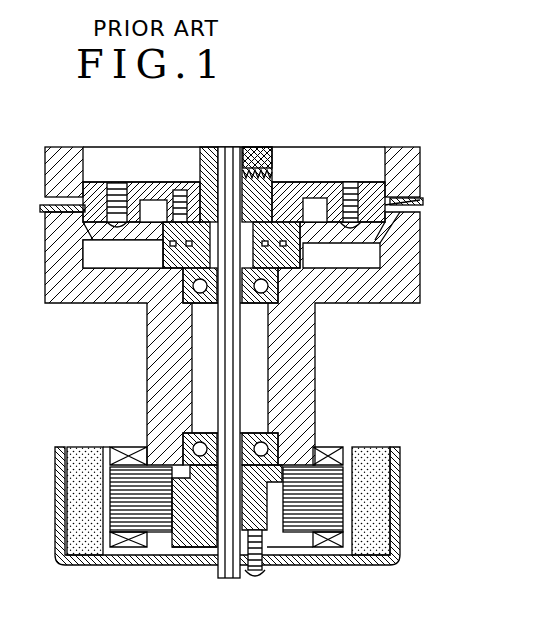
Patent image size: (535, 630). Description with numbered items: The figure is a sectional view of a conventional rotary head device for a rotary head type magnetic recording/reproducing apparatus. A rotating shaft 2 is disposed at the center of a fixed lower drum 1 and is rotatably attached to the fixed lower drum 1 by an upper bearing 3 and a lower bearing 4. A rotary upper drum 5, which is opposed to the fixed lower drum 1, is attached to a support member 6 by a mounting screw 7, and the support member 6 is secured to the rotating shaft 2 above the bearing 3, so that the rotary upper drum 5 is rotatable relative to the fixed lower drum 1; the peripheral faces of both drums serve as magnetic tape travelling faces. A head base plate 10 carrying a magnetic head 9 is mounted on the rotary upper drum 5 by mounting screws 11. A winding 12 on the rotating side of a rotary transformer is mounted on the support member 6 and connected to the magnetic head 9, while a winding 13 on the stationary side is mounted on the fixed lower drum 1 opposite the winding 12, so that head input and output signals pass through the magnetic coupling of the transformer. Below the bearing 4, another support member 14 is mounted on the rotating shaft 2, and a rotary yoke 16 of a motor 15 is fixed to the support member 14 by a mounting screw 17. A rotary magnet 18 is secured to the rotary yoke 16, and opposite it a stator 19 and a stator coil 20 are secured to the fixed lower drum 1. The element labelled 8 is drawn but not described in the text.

The fixed lower drum 1 is at (402, 288).
The rotating shaft 2 is at (227, 568).
The bearing 3 is at (300, 300).
The bearing 4 is at (303, 423).
The rotary upper drum 5 is at (408, 175).
The support member 6 is at (256, 147).
The mounting screw 7 is at (174, 188).
The block 8 is at (273, 150).
The magnetic head 9 is at (423, 203).
The head base plate 10 is at (413, 212).
The mounting screws 11 is at (380, 223).
The winding on the rotating side 12 is at (103, 290).
The winding on the stationary side 13 is at (140, 290).
The support member 14 is at (195, 548).
The motor 15 is at (110, 440).
The rotary yoke 16 is at (383, 556).
The mounting screw 17 is at (257, 572).
The rotary magnet 18 is at (370, 540).
The stator 19 is at (302, 518).
The stator coil 20 is at (330, 450).